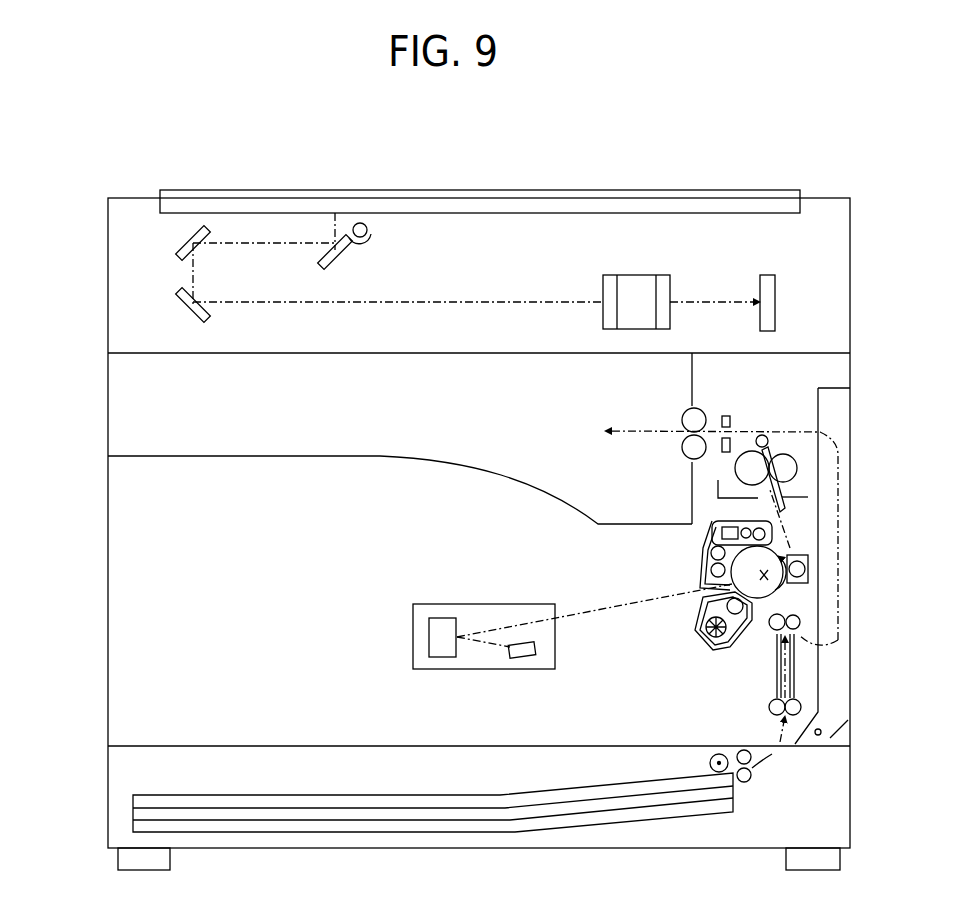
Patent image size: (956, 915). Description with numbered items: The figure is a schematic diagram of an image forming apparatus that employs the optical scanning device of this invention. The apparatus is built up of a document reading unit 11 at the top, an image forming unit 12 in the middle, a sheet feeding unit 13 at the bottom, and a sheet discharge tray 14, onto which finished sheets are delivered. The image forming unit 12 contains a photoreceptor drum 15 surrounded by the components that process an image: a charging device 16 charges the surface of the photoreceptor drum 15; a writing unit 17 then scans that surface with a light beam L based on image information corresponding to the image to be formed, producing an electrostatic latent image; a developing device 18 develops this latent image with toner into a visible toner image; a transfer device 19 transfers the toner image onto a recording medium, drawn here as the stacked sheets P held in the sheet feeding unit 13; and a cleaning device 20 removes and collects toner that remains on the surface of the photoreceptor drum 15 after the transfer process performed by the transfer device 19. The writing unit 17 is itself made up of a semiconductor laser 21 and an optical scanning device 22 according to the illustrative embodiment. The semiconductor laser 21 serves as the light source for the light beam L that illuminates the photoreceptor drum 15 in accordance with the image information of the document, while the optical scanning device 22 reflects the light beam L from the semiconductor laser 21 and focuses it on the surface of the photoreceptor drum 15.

The document reading unit 11 is at (87, 272).
The image forming unit 12 is at (87, 598).
The sheet feeding unit 13 is at (87, 778).
The sheet discharge tray 14 is at (470, 452).
The photoreceptor drum 15 is at (772, 664).
The charging device 16 is at (700, 570).
The writing unit 17 is at (448, 598).
The developing device 18 is at (690, 630).
The transfer device 19 is at (792, 553).
The cleaning device 20 is at (735, 520).
The semiconductor laser 21 is at (520, 660).
The optical scanning device 22 is at (428, 637).
The light beam L is at (598, 605).
The paper P is at (555, 790).